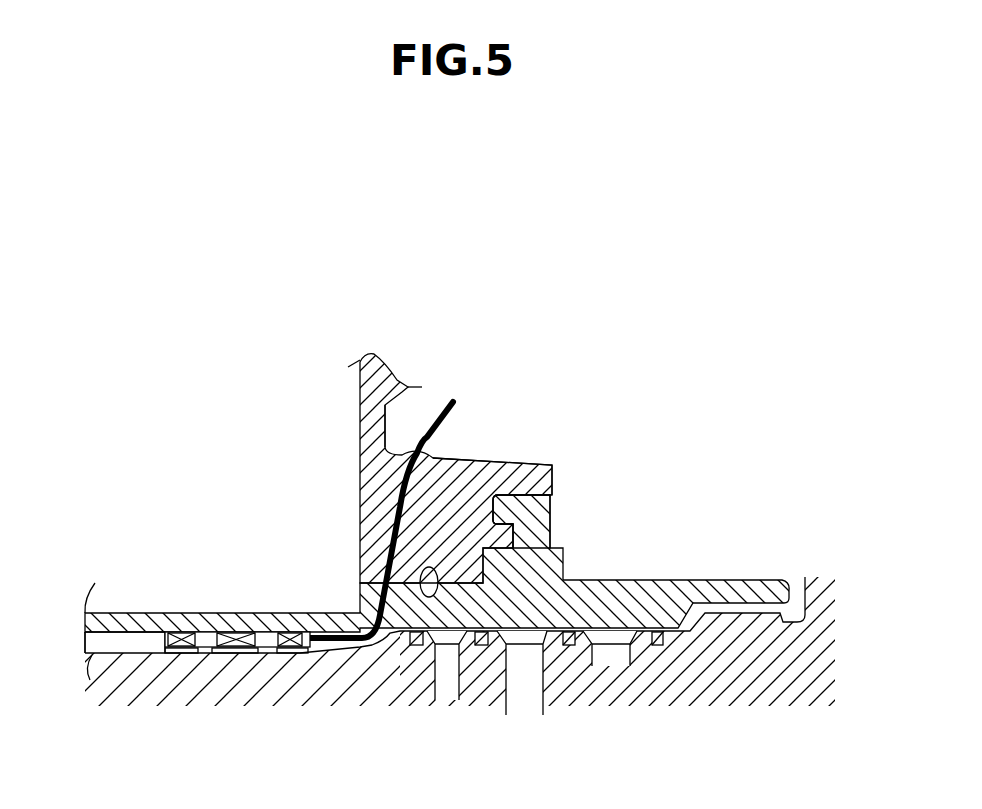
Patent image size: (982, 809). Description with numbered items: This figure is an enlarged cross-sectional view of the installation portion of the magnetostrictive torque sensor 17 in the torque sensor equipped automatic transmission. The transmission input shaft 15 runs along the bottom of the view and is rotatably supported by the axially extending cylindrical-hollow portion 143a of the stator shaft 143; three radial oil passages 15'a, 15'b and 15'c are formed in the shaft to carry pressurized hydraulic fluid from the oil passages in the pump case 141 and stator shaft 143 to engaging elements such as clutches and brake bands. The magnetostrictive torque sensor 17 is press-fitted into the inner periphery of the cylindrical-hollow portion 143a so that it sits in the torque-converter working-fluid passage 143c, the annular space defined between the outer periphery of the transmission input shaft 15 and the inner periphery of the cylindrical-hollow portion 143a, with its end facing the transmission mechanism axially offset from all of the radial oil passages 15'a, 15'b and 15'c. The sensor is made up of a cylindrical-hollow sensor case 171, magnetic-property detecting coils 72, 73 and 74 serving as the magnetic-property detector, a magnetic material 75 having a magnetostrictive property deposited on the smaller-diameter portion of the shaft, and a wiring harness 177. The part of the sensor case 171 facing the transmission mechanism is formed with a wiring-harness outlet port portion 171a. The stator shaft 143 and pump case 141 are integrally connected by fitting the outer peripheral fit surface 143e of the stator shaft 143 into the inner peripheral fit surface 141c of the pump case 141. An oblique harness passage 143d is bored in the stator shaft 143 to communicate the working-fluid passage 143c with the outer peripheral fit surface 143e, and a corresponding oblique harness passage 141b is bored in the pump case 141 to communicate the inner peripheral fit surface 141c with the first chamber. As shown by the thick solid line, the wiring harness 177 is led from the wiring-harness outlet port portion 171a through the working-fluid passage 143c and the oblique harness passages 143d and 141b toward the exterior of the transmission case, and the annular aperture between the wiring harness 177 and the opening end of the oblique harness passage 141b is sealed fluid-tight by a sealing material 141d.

The transmission input shaft 15 is at (460, 676).
The radial oil passage 15'a is at (451, 714).
The radial oil passage 15'b is at (525, 718).
The radial oil passage 15'c is at (614, 703).
The magnetostrictive torque sensor 17 is at (253, 616).
The magnetic-property detecting coil 72 is at (178, 633).
The magnetic-property detecting coil 73 is at (230, 633).
The magnetic-property detecting coil 74 is at (292, 632).
The magnetic material 75 is at (200, 651).
The pump case 141 is at (465, 457).
The oblique harness passage 141b is at (385, 493).
The inner peripheral fit surface 141c is at (513, 477).
The sealing material 141d is at (410, 387).
The stator shaft 143 is at (677, 593).
The cylindrical-hollow portion 143a is at (147, 632).
The torque-converter working-fluid passage 143c is at (123, 640).
The oblique harness passage 143d is at (398, 600).
The outer peripheral fit surface 143e is at (500, 522).
The sensor case 171 is at (265, 645).
The wiring-harness outlet port portion 171a is at (317, 645).
The wiring harness 177 is at (453, 400).